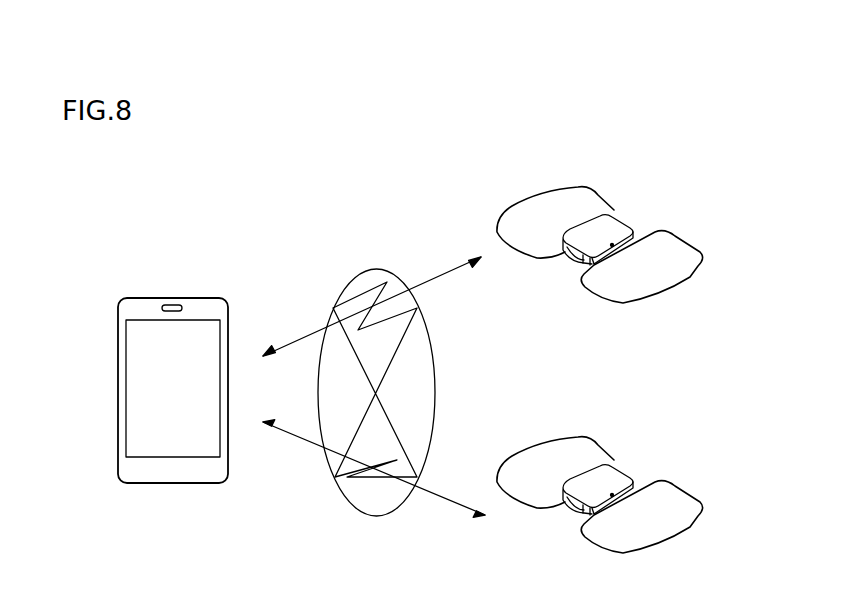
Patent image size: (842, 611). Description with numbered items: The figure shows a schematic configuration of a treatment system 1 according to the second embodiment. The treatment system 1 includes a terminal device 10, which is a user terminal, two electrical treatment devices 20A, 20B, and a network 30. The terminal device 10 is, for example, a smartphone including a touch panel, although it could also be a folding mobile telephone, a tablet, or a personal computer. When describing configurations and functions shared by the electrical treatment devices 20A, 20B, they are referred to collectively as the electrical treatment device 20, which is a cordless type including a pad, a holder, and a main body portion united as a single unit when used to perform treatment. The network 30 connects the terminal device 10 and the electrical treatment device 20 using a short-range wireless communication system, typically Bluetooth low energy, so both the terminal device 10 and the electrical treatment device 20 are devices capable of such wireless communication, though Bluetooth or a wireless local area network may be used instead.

The treatment system 1 is at (660, 119).
The terminal device 10 is at (180, 296).
The electrical treatment device 20 is at (629, 360).
The electrical treatment device 20A is at (598, 196).
The electrical treatment device 20B is at (722, 560).
The network 30 is at (377, 268).